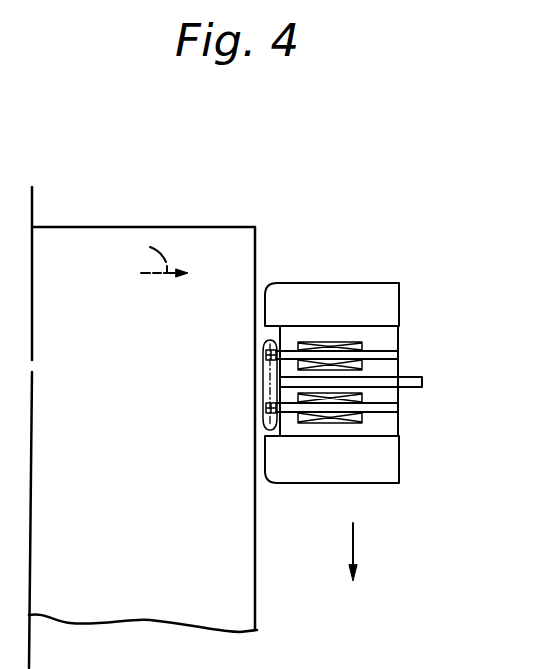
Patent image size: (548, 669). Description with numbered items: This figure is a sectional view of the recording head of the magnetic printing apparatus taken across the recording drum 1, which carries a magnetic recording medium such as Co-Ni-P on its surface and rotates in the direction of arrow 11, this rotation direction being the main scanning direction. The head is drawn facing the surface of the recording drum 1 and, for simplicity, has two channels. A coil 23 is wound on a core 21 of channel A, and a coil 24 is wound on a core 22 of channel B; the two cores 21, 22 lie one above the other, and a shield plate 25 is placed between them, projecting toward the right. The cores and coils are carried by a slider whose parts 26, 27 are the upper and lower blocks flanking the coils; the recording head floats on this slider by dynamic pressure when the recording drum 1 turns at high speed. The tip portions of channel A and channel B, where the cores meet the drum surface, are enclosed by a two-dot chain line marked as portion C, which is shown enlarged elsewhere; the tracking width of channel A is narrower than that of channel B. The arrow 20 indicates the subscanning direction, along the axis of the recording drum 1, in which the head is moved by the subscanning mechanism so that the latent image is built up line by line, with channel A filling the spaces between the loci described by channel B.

The recording drum 1 is at (226, 232).
The arrow (direction of drum rotation) 11 is at (154, 232).
The arrow (subscanning direction) 20 is at (354, 556).
The core of channel A 21 is at (262, 354).
The core of channel B 22 is at (258, 410).
The coil of channel A 23 is at (362, 347).
The coil of channel B 24 is at (358, 420).
The shield plate 25 is at (423, 382).
The slider 26 is at (296, 486).
The slider 27 is at (318, 287).
The portion C (tip portions of ch-A and ch-B) C is at (265, 377).